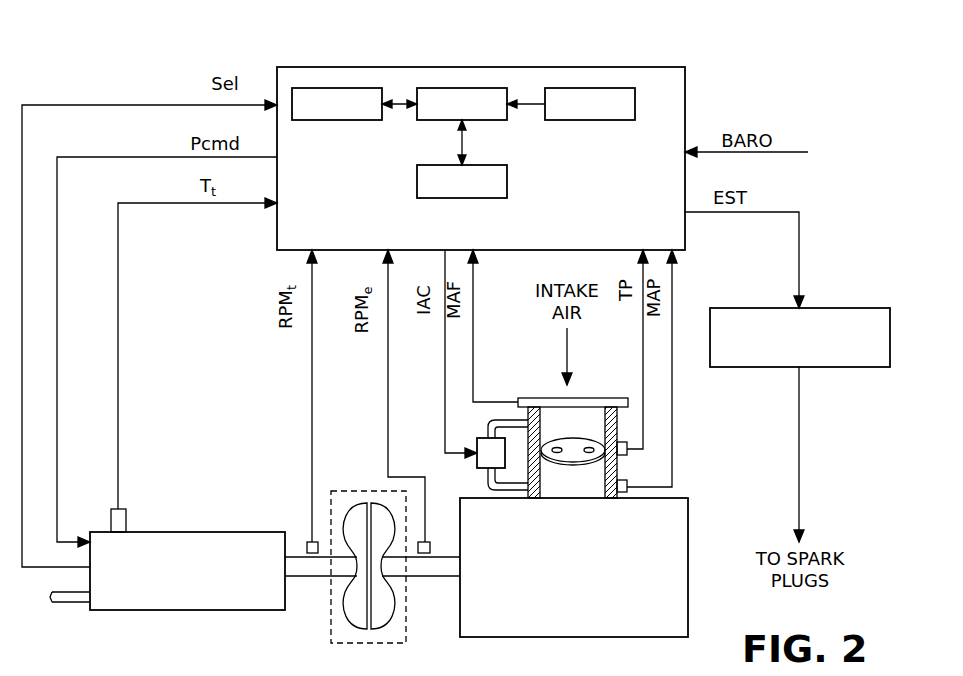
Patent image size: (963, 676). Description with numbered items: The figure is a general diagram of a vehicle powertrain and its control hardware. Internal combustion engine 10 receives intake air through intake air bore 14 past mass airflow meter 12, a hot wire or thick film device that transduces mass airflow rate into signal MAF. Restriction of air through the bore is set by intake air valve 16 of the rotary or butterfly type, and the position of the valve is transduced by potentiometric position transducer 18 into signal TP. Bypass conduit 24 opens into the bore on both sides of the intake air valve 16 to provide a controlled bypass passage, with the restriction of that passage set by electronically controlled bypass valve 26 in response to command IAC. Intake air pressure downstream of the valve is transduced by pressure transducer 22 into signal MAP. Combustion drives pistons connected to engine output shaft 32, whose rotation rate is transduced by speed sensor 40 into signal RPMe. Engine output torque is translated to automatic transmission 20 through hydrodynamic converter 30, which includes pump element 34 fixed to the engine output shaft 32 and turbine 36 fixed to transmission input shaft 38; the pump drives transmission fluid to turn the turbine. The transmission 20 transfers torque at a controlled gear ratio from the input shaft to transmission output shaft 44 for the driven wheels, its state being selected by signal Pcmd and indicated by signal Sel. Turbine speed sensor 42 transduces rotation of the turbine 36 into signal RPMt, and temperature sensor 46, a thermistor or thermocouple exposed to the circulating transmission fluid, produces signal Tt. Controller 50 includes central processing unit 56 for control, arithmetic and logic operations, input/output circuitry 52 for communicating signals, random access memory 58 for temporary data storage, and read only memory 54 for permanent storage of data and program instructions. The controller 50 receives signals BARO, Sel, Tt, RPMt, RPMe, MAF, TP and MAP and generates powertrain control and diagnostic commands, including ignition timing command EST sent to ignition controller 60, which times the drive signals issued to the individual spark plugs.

The internal combustion engine 10 is at (688, 515).
The mass airflow meter 12 is at (520, 398).
The intake air bore 14 is at (612, 420).
The intake air valve 16 is at (573, 443).
The position transducer 18 is at (627, 447).
The automatic transmission 20 is at (188, 598).
The pressure transducer 22 is at (625, 485).
The bypass conduit 24 is at (500, 486).
The bypass valve 26 is at (482, 442).
The hydrodynamic converter 30 is at (349, 534).
The engine output shaft 32 is at (420, 570).
The pump element 34 is at (380, 508).
The turbine 36 is at (352, 600).
The transmission input shaft 38 is at (312, 570).
The speed sensor 40 is at (425, 553).
The turbine speed sensor 42 is at (308, 541).
The transmission output shaft 44 is at (75, 597).
The temperature sensor 46 is at (120, 520).
The controller 50 is at (498, 138).
The input/output circuitry 52 is at (507, 180).
The read only memory 54 is at (556, 115).
The central processing unit 56 is at (427, 105).
The random access memory 58 is at (300, 113).
The ignition controller 60 is at (860, 315).